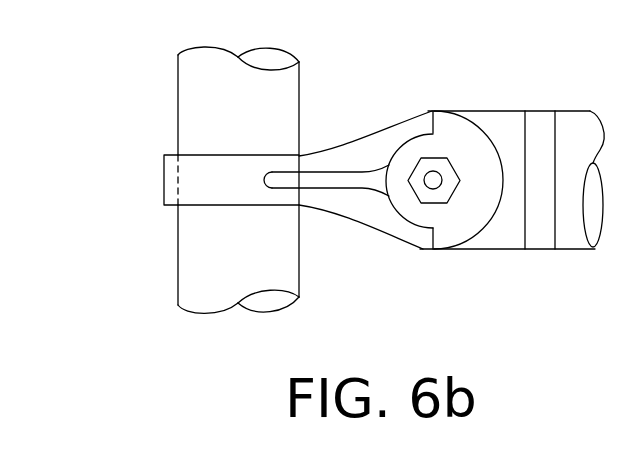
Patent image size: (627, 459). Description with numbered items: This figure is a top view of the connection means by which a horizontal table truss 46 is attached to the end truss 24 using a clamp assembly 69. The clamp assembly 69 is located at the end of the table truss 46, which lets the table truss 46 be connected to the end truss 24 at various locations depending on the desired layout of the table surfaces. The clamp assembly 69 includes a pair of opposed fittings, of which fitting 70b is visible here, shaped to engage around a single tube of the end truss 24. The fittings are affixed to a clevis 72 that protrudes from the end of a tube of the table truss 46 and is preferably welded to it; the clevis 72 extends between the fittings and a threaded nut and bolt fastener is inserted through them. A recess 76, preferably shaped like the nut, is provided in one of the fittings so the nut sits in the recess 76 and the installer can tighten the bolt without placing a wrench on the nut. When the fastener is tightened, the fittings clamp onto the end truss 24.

The end truss member 24 is at (285, 93).
The horizontal table truss 46 is at (583, 249).
The clamp assembly 69 is at (128, 234).
The fitting 70b is at (378, 137).
The clevis 72 is at (537, 111).
The recess 76 is at (447, 160).